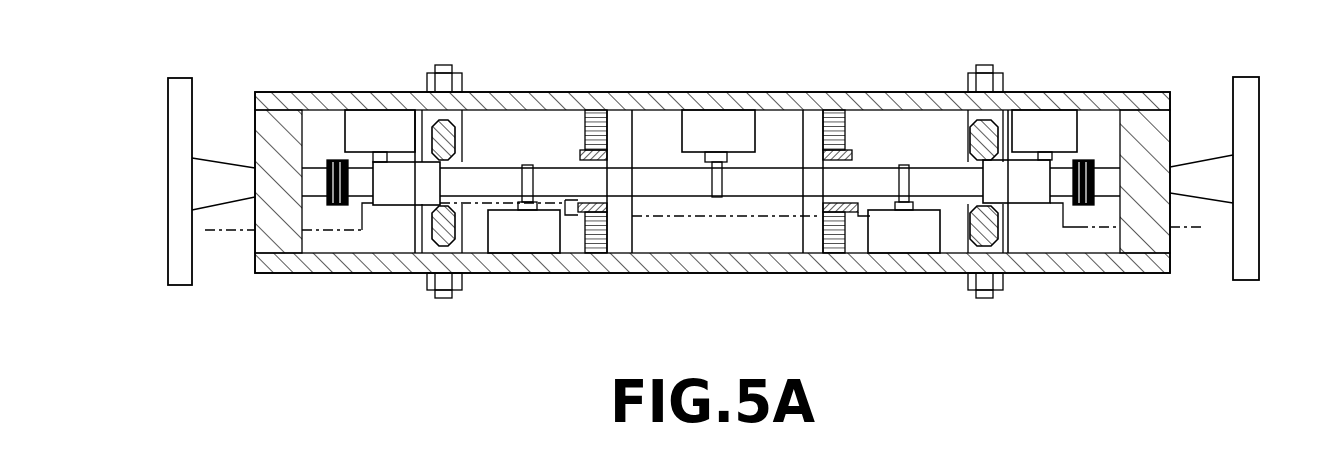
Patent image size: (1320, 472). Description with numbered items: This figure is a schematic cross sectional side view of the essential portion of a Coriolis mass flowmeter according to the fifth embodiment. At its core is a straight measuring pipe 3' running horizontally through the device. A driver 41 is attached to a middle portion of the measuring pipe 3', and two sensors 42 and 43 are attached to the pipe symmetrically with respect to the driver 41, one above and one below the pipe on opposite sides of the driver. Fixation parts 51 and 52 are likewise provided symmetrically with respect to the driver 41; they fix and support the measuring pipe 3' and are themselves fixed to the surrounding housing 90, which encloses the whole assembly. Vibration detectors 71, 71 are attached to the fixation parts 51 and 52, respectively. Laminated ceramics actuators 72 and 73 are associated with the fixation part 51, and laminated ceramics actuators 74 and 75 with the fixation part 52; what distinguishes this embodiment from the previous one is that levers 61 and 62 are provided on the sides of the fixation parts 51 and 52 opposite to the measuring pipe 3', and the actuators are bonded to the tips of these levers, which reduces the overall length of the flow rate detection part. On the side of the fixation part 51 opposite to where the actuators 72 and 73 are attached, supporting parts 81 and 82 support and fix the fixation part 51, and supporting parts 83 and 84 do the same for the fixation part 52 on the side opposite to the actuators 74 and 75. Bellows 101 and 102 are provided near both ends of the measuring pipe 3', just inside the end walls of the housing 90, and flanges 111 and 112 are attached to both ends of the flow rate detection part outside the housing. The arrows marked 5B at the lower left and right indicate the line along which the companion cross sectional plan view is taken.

The measuring pipe 3' is at (711, 211).
The driver 41 is at (715, 118).
The sensor 42 is at (905, 238).
The sensor 43 is at (533, 242).
The fixation part 51 is at (1037, 192).
The fixation part 52 is at (398, 196).
The lever 61 is at (873, 166).
The lever 62 is at (487, 167).
The vibration detector 71 is at (367, 118).
The laminated ceramics actuator 72 is at (838, 255).
The laminated ceramics actuator 73 is at (838, 118).
The laminated ceramics actuator 74 is at (597, 238).
The laminated ceramics actuator 75 is at (617, 130).
The supporting part 81 is at (1000, 127).
The supporting part 82 is at (965, 232).
The supporting part 83 is at (455, 130).
The supporting part 84 is at (455, 228).
The housing 90 is at (690, 256).
The bellows 101 is at (1088, 158).
The bellows 102 is at (330, 158).
The flange 111 is at (1250, 102).
The flange 112 is at (165, 95).
The section line 5B— 5B is at (222, 229).